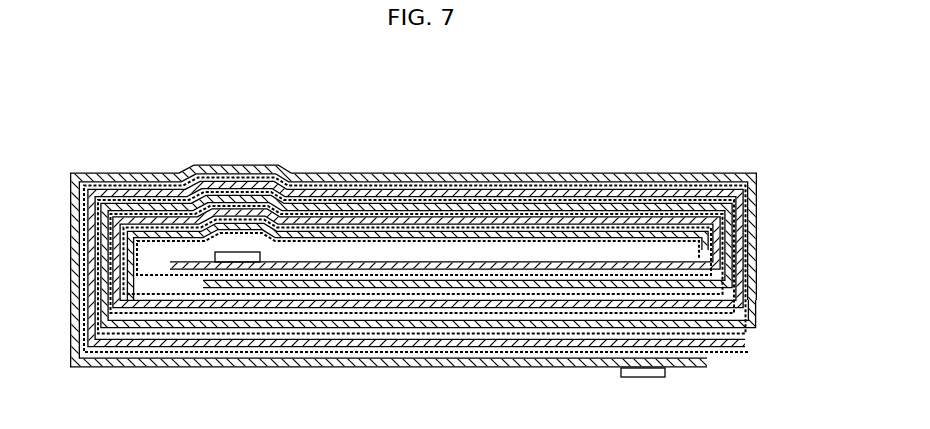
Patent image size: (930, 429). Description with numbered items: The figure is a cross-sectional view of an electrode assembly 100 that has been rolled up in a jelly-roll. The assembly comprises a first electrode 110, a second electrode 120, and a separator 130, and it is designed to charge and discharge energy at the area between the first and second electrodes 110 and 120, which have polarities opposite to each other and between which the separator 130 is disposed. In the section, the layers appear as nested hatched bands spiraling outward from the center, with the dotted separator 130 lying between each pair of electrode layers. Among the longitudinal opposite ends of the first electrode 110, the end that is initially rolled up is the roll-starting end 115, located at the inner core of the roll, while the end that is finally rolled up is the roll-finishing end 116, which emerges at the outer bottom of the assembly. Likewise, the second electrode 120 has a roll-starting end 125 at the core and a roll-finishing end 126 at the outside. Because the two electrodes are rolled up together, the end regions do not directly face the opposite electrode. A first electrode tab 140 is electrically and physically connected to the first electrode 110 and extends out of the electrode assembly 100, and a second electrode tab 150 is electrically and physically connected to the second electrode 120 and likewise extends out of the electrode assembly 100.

The electrode assembly 100 is at (152, 86).
The first electrode 110 is at (406, 283).
The roll-starting end 115 is at (203, 284).
The roll-finishing end 116 is at (710, 365).
The second electrode 120 is at (314, 263).
The roll-starting end 125 is at (167, 263).
The roll-finishing end 126 is at (746, 343).
The separator 130 is at (363, 255).
The first electrode tab 140 is at (648, 377).
The second electrode tab 150 is at (190, 218).